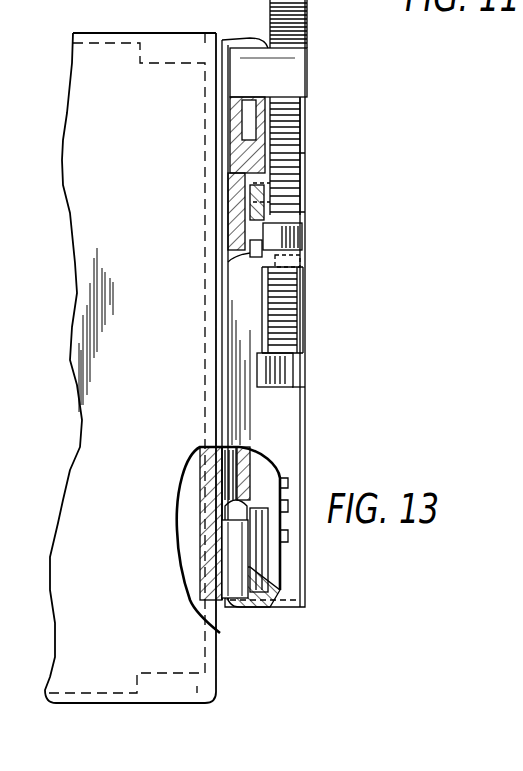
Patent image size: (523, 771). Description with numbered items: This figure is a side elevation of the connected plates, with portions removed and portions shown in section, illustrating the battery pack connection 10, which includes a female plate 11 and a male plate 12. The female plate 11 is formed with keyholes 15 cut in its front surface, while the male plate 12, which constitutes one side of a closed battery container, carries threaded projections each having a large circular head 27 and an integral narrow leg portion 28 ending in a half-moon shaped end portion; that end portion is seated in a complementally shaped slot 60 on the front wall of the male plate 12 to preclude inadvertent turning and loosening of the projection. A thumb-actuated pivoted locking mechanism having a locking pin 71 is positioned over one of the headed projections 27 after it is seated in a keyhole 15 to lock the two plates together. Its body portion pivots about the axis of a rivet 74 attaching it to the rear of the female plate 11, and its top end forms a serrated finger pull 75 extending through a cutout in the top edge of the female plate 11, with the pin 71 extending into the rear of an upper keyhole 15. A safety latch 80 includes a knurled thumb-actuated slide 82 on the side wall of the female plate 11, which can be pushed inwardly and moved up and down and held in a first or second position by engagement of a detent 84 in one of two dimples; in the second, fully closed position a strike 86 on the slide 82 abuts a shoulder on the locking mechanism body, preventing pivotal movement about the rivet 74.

The battery pack connection 10 is at (308, 293).
The female plate 11 is at (290, 405).
The male plate 12 is at (95, 43).
The keyhole 15 is at (250, 170).
The circular head 27 is at (260, 218).
The narrow leg portion 28 is at (247, 535).
The complementally shaped slot 60 is at (225, 580).
The locking pin 71 is at (268, 197).
The rivet 74 is at (300, 145).
The serrated finger pull 75 is at (300, 26).
The safety latch 80 is at (308, 333).
The knurled thumb-actuated slide 82 is at (270, 345).
The detent 84 is at (280, 265).
The strike 86 is at (302, 231).